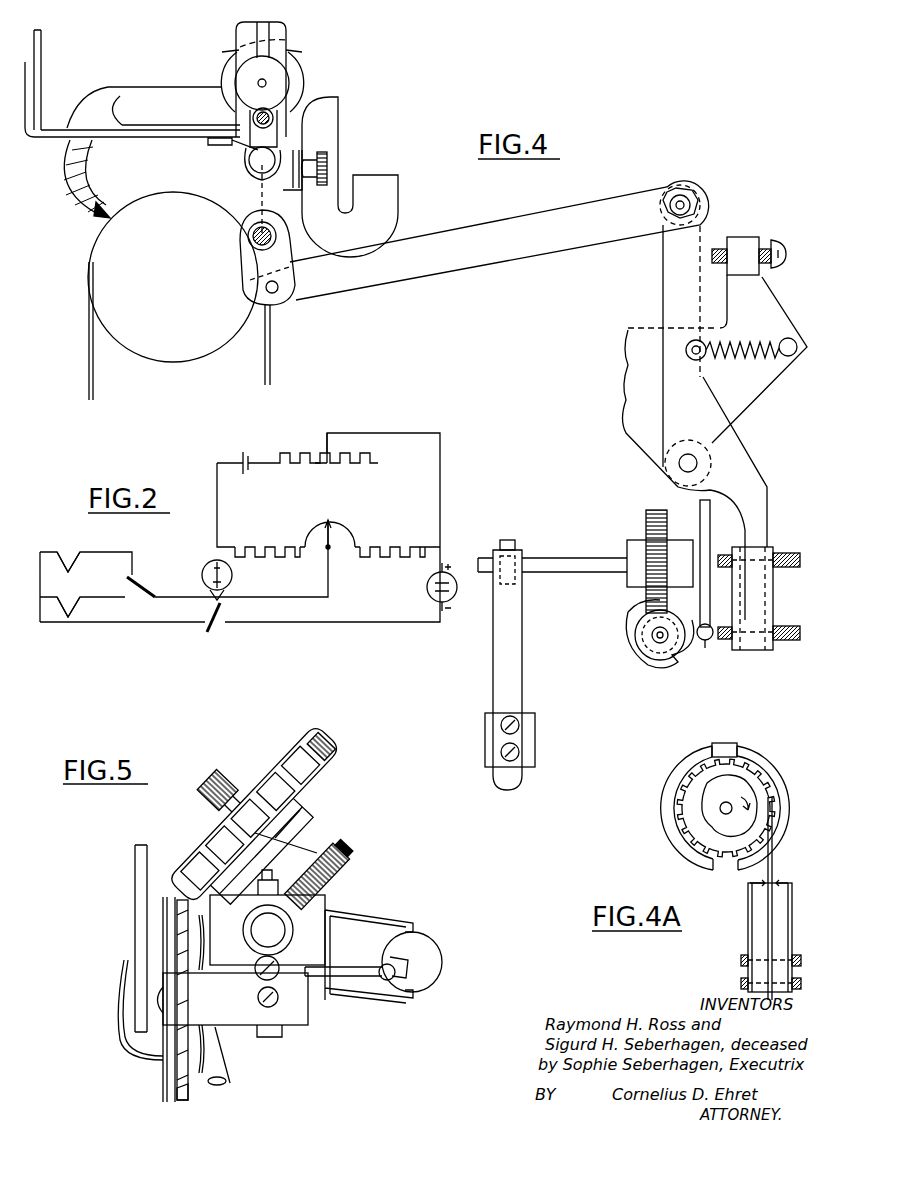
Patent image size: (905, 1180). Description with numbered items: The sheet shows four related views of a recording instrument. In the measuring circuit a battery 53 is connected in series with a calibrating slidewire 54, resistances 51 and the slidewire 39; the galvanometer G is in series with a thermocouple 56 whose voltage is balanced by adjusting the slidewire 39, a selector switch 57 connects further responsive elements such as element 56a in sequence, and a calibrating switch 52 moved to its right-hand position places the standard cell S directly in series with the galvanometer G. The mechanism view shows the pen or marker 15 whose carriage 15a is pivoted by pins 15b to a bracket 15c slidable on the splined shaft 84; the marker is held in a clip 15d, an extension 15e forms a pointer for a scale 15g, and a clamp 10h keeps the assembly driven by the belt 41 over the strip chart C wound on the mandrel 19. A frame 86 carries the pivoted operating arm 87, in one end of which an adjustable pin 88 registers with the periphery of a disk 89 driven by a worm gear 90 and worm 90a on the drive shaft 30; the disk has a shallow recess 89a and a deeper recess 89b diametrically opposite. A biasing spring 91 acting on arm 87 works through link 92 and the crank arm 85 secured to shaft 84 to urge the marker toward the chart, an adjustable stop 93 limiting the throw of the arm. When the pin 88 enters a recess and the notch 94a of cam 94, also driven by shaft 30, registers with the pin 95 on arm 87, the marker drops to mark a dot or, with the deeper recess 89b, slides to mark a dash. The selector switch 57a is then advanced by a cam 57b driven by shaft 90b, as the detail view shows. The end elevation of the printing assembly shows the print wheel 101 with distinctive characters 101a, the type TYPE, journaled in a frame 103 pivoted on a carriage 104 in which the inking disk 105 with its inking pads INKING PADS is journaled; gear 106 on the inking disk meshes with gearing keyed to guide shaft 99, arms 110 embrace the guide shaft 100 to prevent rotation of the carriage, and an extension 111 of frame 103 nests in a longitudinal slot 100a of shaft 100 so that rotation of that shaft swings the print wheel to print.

In FIG. 4, the pen 15 is at (146, 96).
In FIG. 4, the carriage 15a is at (278, 100).
In FIG. 4, the pins 15b is at (272, 117).
In FIG. 4, the bracket 15c is at (220, 146).
In FIG. 4, the clip 15d is at (300, 55).
In FIG. 4, the extension 15e is at (29, 98).
In FIG. 4, the scale 15g is at (42, 43).
In FIG. 4, the clamp 10h is at (330, 160).
In FIG. 4, the driving belt 41 is at (300, 152).
In FIG. 4, the splined shaft 84 is at (258, 162).
In FIG. 4, the crank arm 85 is at (248, 262).
In FIG. 4, the mandrel 19 is at (163, 348).
In FIG. 4, the strip chart C is at (88, 372).
In FIG. 4, the link 92 is at (536, 245).
In FIG. 4, the adjustable stop 93 is at (718, 248).
In FIG. 4, the biasing spring 91 is at (745, 338).
In FIG. 4, the frame 86 is at (755, 411).
In FIG. 4, the operating arm 87 is at (709, 422).
In FIG. 4, the adjustable pin 88 is at (738, 545).
In FIG. 4, the disk 89 is at (700, 525).
In FIG. 4A, the disk 89 is at (672, 782).
In FIG. 4, the recess 89a is at (712, 500).
In FIG. 4A, the recess 89a is at (727, 748).
In FIG. 4, the recess 89b is at (712, 640).
In FIG. 4A, the recess 89b is at (722, 869).
In FIG. 4, the worm gear 90 is at (650, 575).
In FIG. 4A, the worm gear 90 is at (677, 827).
In FIG. 4, the worm 90a is at (655, 648).
In FIG. 4, the shaft 90b is at (545, 560).
In FIG. 4A, the shaft 90b is at (722, 814).
In FIG. 4, the cam 94 is at (675, 662).
In FIG. 4, the notch 94a is at (636, 628).
In FIG. 4, the pin 95 is at (705, 648).
In FIG. 4, the drive shaft 30 is at (654, 642).
In FIG. 4, the selector switch 57a is at (522, 674).
In FIG. 4A, the selector switch 57a is at (762, 938).
In FIG. 4, the cam 57b is at (508, 540).
In FIG. 4A, the cam 57b is at (705, 802).
In FIG. 2, the thermocouple 56 is at (70, 558).
In FIG. 2, the responsive element 56a is at (76, 612).
In FIG. 2, the selector switch 57 is at (140, 588).
In FIG. 2, the calibrating switch 52 is at (214, 625).
In FIG. 2, the battery 53 is at (244, 470).
In FIG. 2, the calibrating slidewire 54 is at (322, 465).
In FIG. 2, the resistors 51 is at (268, 545).
In FIG. 2, the slidewire 39 is at (338, 524).
In FIG. 2, the galvanometer G is at (232, 575).
In FIG. 2, the standard cell S is at (427, 588).
In FIG. 5, the inking disk 105 is at (292, 742).
In FIG. 5, the gear 106 is at (335, 858).
In FIG. 5, the carriage 104 is at (313, 912).
In FIG. 5, the frame 103 is at (307, 1020).
In FIG. 5, the guide shaft 99 is at (283, 936).
In FIG. 5, the arms 110 is at (393, 923).
In FIG. 5, the extension 111 is at (337, 967).
In FIG. 5, the guide shaft 100 is at (440, 967).
In FIG. 5, the longitudinal slot 100a is at (402, 962).
In FIG. 5, the print wheel 101 is at (163, 912).
In FIG. 5, the distinctive characters 101a is at (180, 1100).
In FIG. 5, the inking pads INKING PADS is at (282, 797).
In FIG. 5, the type TYPE is at (185, 1093).